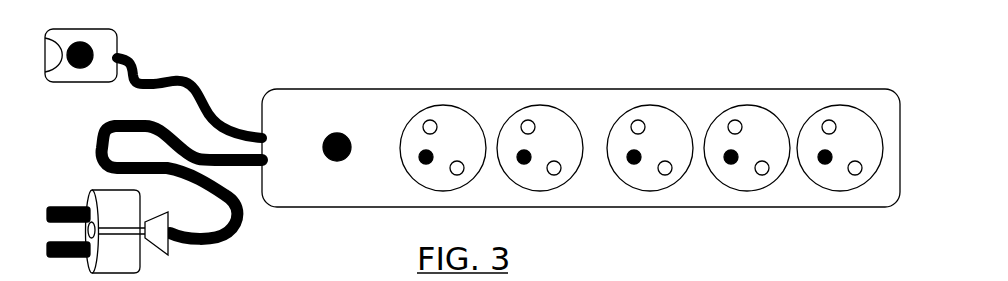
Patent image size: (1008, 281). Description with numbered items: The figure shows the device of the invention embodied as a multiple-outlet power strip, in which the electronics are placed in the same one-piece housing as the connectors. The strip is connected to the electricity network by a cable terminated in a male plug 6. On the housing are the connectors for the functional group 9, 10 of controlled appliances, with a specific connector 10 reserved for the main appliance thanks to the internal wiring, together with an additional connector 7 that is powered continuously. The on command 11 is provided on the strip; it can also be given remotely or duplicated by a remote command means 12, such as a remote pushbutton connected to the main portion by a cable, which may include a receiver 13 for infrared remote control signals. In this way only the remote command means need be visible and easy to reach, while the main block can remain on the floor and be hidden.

The male plug 6 is at (95, 190).
The connector 7 is at (447, 106).
The connectors for the functional group 9 is at (648, 107).
The specific connector 10 is at (557, 106).
The on command 11 is at (90, 50).
The remote command means 12 is at (103, 82).
The receiver 13 is at (43, 62).